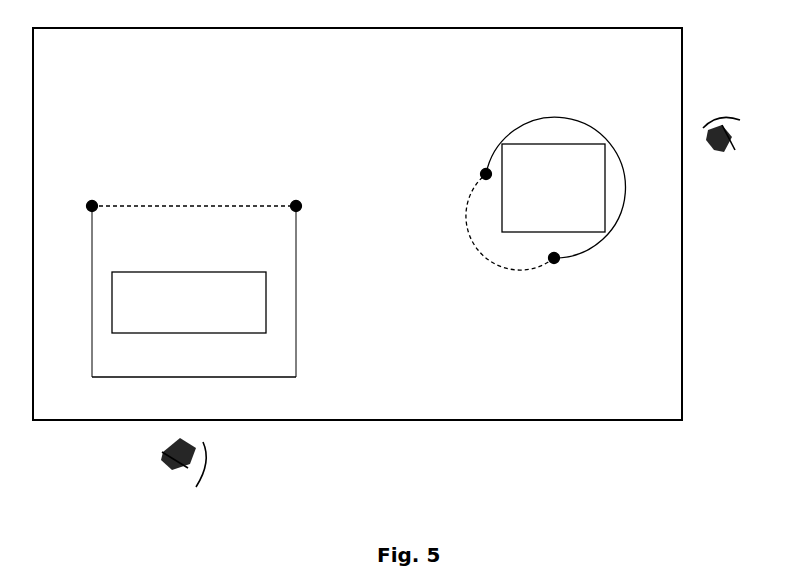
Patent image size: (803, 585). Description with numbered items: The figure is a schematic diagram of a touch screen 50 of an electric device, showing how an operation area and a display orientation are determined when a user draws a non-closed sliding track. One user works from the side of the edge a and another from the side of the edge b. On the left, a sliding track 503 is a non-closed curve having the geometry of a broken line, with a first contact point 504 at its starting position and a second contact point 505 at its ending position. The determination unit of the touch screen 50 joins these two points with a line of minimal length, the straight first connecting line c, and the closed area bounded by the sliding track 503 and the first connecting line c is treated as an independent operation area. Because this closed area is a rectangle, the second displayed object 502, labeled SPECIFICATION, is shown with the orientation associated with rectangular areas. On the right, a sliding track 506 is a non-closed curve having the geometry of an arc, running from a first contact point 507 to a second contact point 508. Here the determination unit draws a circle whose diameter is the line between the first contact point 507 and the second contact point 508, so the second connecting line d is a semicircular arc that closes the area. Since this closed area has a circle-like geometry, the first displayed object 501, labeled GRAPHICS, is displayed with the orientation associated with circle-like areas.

The touch screen 50 is at (682, 223).
The edge a is at (682, 347).
The edge b is at (358, 420).
The first connecting line c is at (196, 205).
The second connecting line d is at (528, 270).
The first displayed object 501 is at (556, 142).
The second displayed object 502 is at (189, 272).
The sliding track 503 is at (296, 338).
The first contact point 504 is at (96, 201).
The second contact point 505 is at (299, 203).
The sliding track 506 is at (538, 119).
The first contact point 507 is at (484, 170).
The second contact point 508 is at (557, 262).